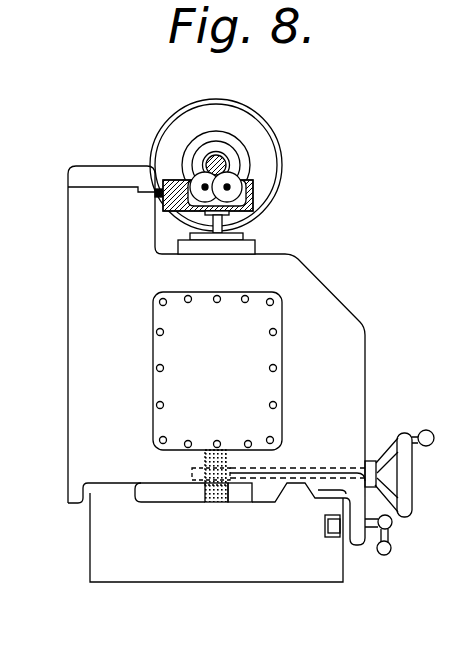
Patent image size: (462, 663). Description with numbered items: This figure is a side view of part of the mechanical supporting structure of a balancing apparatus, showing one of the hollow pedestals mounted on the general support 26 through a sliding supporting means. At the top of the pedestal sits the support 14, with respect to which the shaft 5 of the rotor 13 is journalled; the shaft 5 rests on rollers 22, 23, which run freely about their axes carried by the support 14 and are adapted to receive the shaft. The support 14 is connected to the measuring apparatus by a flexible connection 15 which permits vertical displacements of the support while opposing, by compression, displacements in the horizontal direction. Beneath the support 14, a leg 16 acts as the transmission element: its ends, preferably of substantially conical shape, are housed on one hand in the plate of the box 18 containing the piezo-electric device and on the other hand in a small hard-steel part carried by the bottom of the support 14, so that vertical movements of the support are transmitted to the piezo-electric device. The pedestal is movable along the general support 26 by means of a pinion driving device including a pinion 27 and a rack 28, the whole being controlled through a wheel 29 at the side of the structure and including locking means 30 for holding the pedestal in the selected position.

The shaft 5 is at (207, 163).
The rotor 13 is at (167, 127).
The support 14 is at (253, 195).
The flexible connection 15 is at (157, 195).
The leg 16 is at (220, 214).
The box 18 is at (233, 247).
The roller 22 is at (195, 182).
The roller 23 is at (237, 178).
The general support 26 is at (227, 575).
The pinion 27 is at (230, 455).
The rack 28 is at (200, 487).
The wheel 29 is at (406, 470).
The locking means 30 is at (391, 536).